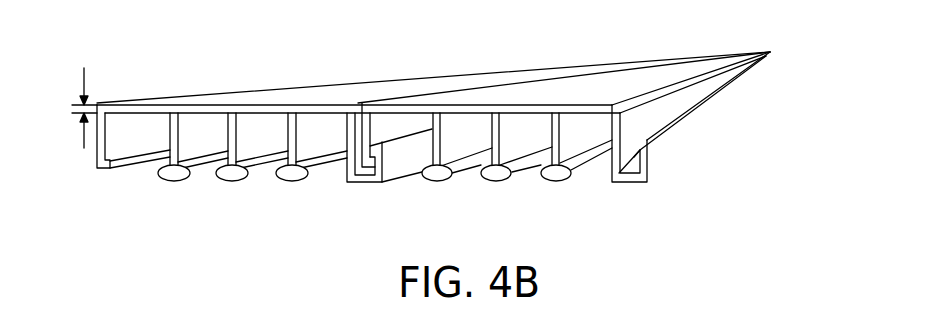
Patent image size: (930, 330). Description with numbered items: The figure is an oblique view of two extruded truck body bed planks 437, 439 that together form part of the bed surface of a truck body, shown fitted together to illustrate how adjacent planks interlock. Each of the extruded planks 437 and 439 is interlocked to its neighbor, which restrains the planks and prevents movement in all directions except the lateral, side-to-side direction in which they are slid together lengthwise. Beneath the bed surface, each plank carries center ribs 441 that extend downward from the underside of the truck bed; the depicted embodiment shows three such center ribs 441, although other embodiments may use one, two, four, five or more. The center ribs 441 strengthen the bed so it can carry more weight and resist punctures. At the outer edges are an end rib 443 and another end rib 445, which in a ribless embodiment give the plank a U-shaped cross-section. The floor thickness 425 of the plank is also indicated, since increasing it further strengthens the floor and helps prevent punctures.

The floor thickness 425 is at (62, 108).
The extruded plank 437 is at (597, 82).
The extruded plank 439 is at (331, 92).
The center rib 441 is at (437, 181).
The end rib 443 is at (628, 182).
The end rib 445 is at (102, 169).